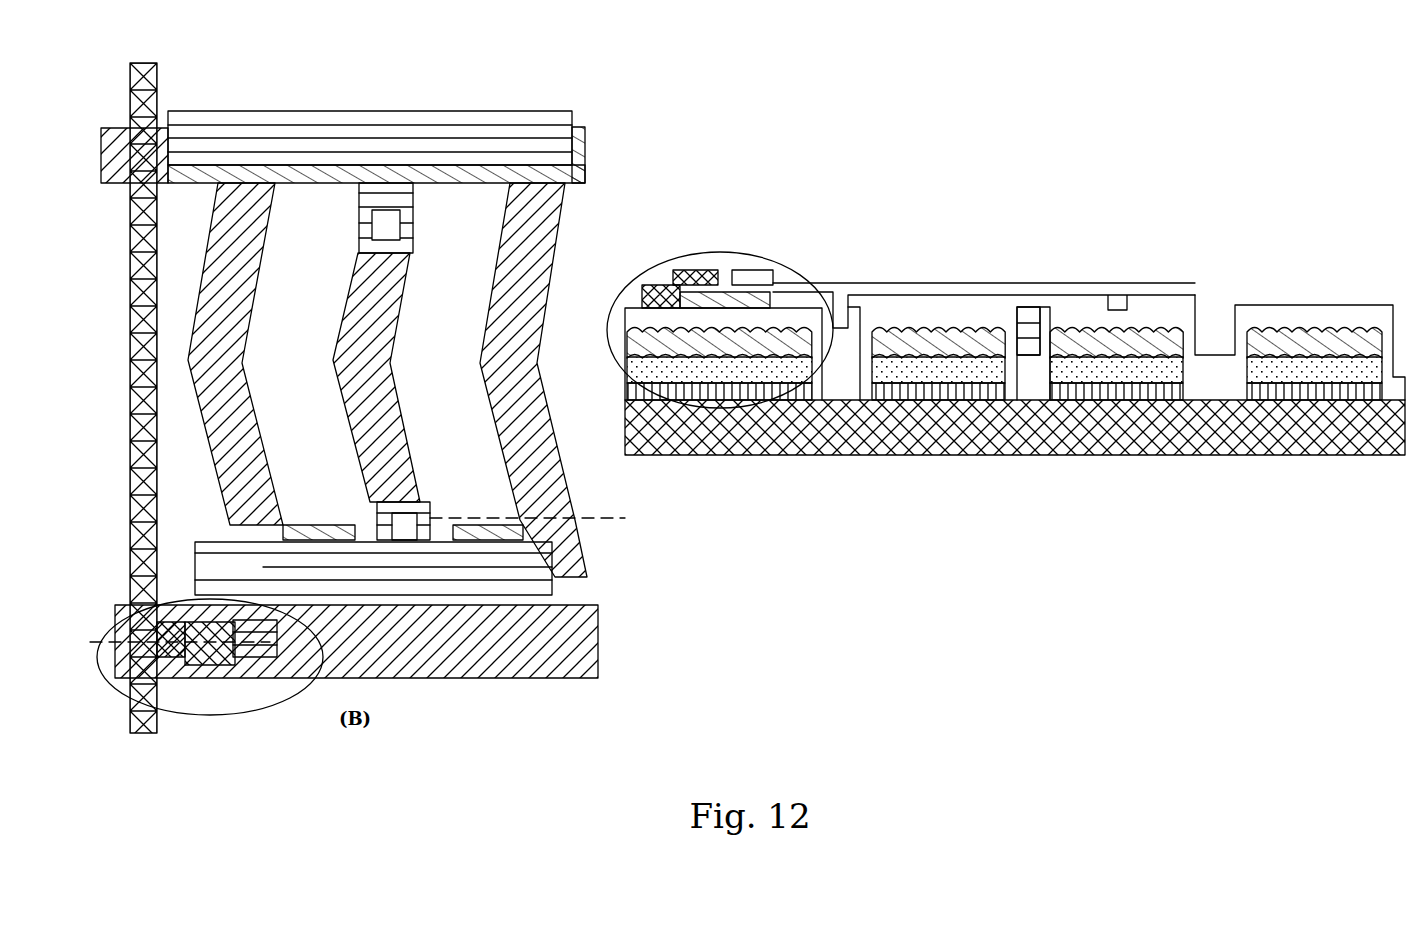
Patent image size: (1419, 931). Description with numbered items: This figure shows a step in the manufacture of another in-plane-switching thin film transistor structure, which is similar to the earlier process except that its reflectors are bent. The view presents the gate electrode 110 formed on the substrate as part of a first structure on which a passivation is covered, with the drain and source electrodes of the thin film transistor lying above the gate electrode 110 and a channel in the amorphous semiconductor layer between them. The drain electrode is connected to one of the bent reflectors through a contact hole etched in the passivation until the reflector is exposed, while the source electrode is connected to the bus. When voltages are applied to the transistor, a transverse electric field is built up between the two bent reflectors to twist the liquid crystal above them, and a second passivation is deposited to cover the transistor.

The gate electrode 110 is at (637, 318).